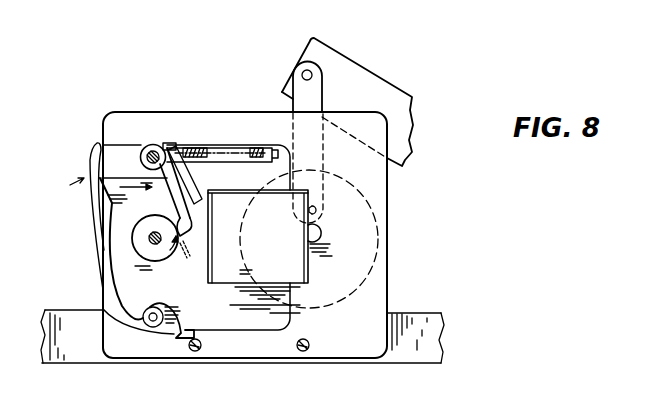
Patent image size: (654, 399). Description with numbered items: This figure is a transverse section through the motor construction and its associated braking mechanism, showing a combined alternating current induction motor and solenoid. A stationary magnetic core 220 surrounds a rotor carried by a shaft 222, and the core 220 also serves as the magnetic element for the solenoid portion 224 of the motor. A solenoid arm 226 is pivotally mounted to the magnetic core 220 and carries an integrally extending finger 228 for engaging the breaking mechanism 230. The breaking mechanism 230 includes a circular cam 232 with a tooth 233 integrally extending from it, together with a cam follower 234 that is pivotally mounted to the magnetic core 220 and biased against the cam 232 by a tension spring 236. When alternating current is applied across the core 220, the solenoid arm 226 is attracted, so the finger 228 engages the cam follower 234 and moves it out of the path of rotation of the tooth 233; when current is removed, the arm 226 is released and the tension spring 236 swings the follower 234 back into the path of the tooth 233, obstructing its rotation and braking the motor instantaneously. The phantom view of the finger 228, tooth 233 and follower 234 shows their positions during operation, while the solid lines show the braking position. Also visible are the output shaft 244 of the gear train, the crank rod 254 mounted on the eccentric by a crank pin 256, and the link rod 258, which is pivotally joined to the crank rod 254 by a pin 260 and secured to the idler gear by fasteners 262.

The stationary magnetic core 220 is at (140, 147).
The shaft 222 is at (153, 245).
The solenoid portion 224 is at (106, 151).
The solenoid arm 226 is at (95, 211).
The finger 228 is at (118, 179).
The breaking mechanism 230 is at (170, 213).
The circular cam 232 is at (140, 233).
The tooth 233 is at (190, 230).
The cam follower 234 is at (184, 191).
The tension spring 236 is at (203, 147).
The output shaft 244 is at (322, 242).
The crank rod 254 is at (292, 93).
The crank pin 256 is at (314, 211).
The link rod 258 is at (380, 82).
The pin 260 is at (312, 70).
The fasteners 262 is at (298, 352).